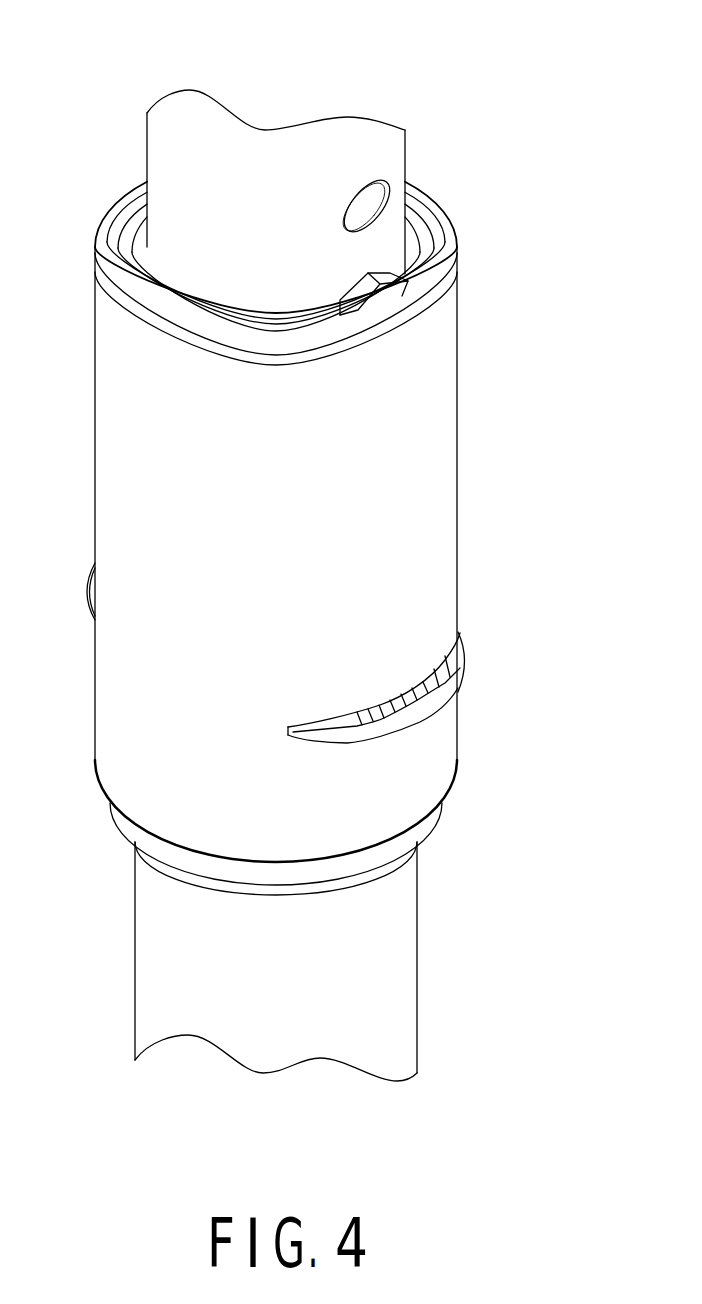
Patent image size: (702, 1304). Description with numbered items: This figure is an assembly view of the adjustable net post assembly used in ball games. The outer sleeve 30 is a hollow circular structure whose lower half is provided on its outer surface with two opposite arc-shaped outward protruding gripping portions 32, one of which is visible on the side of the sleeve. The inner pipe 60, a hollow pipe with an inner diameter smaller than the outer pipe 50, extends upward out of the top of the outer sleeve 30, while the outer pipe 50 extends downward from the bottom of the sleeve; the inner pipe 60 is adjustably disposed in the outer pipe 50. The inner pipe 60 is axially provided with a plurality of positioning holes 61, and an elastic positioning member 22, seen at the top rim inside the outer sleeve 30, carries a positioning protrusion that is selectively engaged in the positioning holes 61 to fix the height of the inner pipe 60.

The elastic positioning member 22 is at (406, 283).
The outer sleeve 30 is at (490, 487).
The gripping portion 32 is at (462, 688).
The outer pipe 50 is at (382, 988).
The inner pipe 60 is at (325, 142).
The positioning hole 61 is at (365, 200).